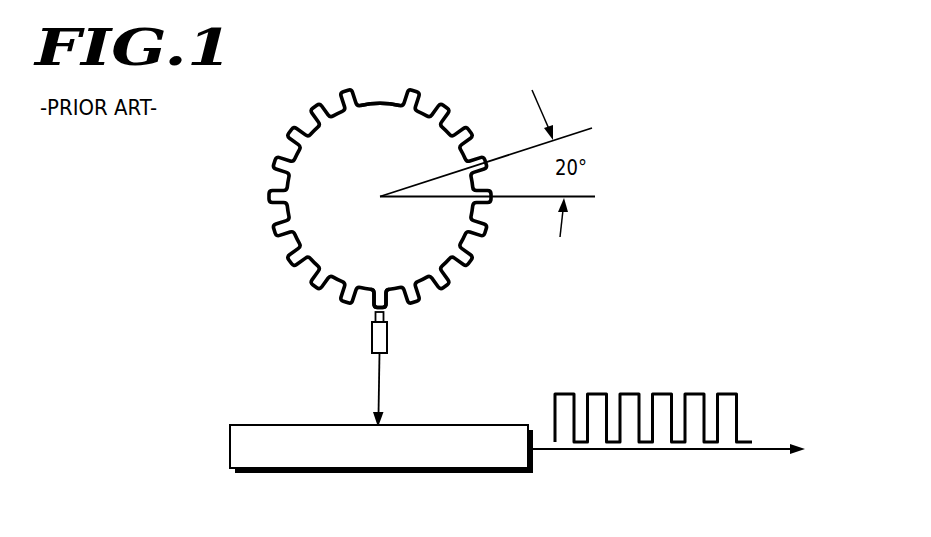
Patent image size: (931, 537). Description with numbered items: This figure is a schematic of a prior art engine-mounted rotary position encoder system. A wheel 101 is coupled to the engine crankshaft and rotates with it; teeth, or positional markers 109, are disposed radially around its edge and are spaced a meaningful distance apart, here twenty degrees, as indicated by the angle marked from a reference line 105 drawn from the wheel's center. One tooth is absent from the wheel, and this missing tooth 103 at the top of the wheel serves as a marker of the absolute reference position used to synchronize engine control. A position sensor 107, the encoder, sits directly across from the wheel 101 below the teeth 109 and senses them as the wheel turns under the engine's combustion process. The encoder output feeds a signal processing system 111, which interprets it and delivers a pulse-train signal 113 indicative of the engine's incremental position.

The wheel 101 is at (305, 162).
The missing tooth 103 is at (385, 95).
The reference line 105 is at (580, 200).
The position sensor 107 is at (388, 348).
The teeth 109 is at (372, 303).
The signal processing system 111 is at (230, 445).
The signal 113 is at (742, 412).